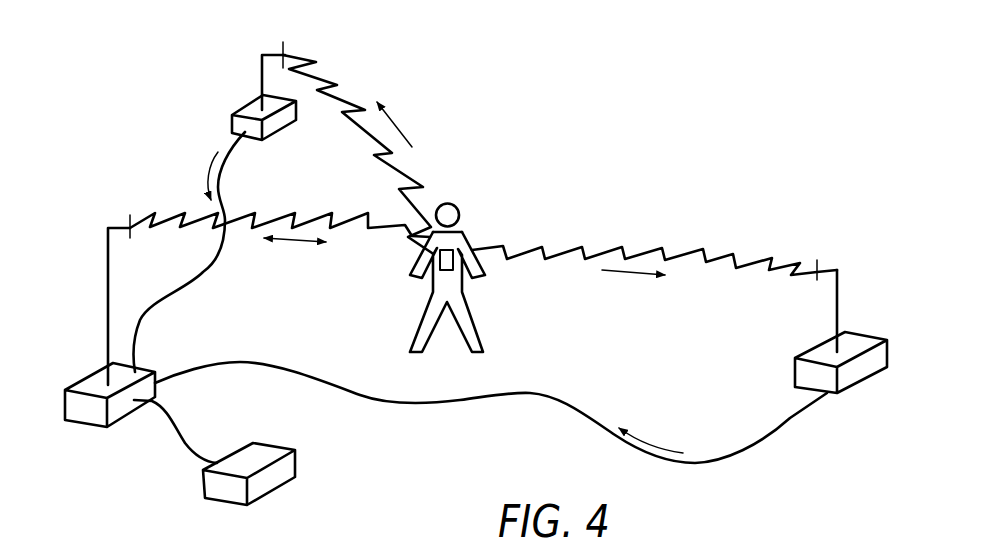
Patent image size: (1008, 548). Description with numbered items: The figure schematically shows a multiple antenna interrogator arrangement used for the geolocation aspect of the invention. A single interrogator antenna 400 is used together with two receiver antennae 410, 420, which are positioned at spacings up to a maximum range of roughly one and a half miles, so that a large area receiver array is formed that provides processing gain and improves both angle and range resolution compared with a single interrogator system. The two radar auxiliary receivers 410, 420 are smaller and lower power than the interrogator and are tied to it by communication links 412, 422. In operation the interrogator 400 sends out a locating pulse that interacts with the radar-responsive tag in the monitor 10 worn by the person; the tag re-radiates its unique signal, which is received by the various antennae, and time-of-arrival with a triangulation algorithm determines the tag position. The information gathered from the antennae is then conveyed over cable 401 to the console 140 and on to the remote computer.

The monitor 10 is at (454, 255).
The console 140 is at (283, 487).
The interrogator antenna 400 is at (107, 335).
The cable 401 is at (172, 432).
The receiver antenna 410 is at (262, 77).
The communication link 412 is at (223, 163).
The receiver antenna 420 is at (840, 315).
The communication link 422 is at (460, 402).